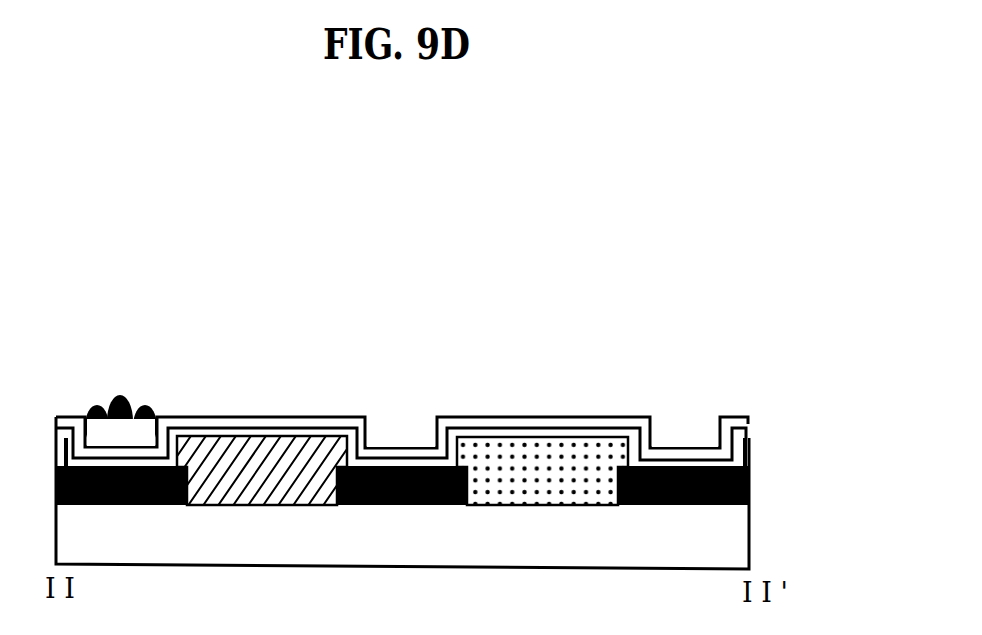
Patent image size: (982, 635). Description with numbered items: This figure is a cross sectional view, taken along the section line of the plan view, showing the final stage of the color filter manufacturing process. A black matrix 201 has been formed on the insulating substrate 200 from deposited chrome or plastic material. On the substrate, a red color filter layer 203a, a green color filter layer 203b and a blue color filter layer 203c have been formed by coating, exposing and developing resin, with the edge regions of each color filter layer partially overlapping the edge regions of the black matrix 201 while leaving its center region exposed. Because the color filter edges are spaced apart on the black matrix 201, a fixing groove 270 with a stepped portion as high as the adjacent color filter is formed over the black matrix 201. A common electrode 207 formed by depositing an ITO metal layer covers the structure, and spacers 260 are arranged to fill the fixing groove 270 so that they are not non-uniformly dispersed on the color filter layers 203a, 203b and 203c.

The insulating substrate 200 is at (749, 538).
The black matrix 201 is at (748, 431).
The red color filter layer 203a is at (264, 442).
The green color filter layer 203b is at (542, 445).
The blue color filter layer 203c is at (56, 417).
The common electrode 207 is at (750, 424).
The spacer 260 is at (119, 392).
The fixing groove 270 is at (152, 388).